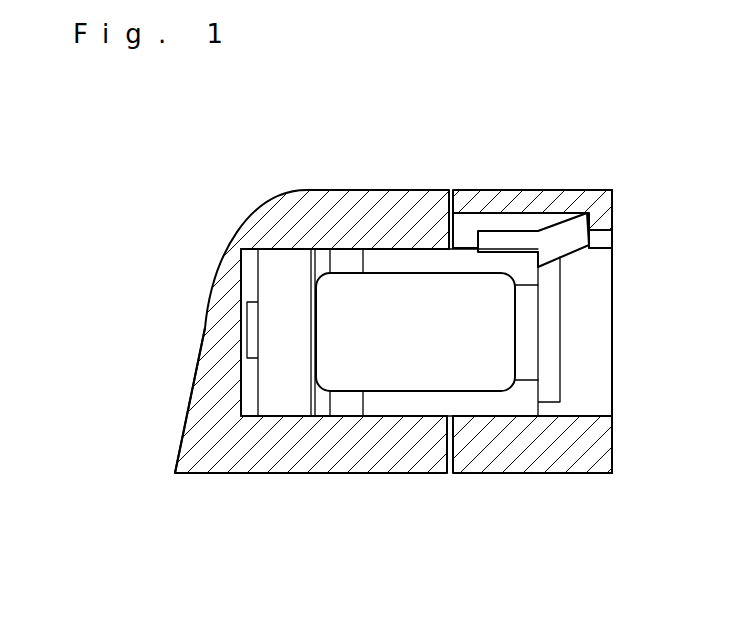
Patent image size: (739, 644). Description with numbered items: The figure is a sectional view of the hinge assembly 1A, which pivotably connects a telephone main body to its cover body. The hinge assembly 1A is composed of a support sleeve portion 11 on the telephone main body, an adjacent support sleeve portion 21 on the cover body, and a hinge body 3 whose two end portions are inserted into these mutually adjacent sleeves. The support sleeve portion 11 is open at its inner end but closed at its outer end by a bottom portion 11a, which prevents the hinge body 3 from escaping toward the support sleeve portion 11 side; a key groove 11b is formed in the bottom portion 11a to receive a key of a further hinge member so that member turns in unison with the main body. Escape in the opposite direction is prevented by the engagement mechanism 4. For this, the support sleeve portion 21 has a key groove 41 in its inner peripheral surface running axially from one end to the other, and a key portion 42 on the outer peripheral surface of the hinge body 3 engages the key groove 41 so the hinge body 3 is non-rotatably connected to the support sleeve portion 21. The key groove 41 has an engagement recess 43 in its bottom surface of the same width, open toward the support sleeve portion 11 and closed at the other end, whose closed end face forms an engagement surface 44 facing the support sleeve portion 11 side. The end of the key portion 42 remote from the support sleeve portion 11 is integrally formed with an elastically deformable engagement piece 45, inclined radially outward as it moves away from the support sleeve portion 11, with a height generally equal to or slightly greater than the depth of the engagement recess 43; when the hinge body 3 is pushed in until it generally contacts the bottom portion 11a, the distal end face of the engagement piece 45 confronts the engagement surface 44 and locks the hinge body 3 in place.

The hinge assembly 1A is at (377, 182).
The support sleeve portion 11 is at (337, 186).
The bottom portion 11a is at (202, 346).
The key groove 11b is at (238, 390).
The hinge body 3 is at (399, 427).
The support sleeve portion 21 is at (528, 475).
The engagement mechanism 4 is at (546, 221).
The key groove 41 is at (604, 237).
The key portion 42 is at (492, 242).
The engagement recess 43 is at (509, 215).
The engagement surface 44 is at (578, 210).
The engagement piece 45 is at (565, 232).